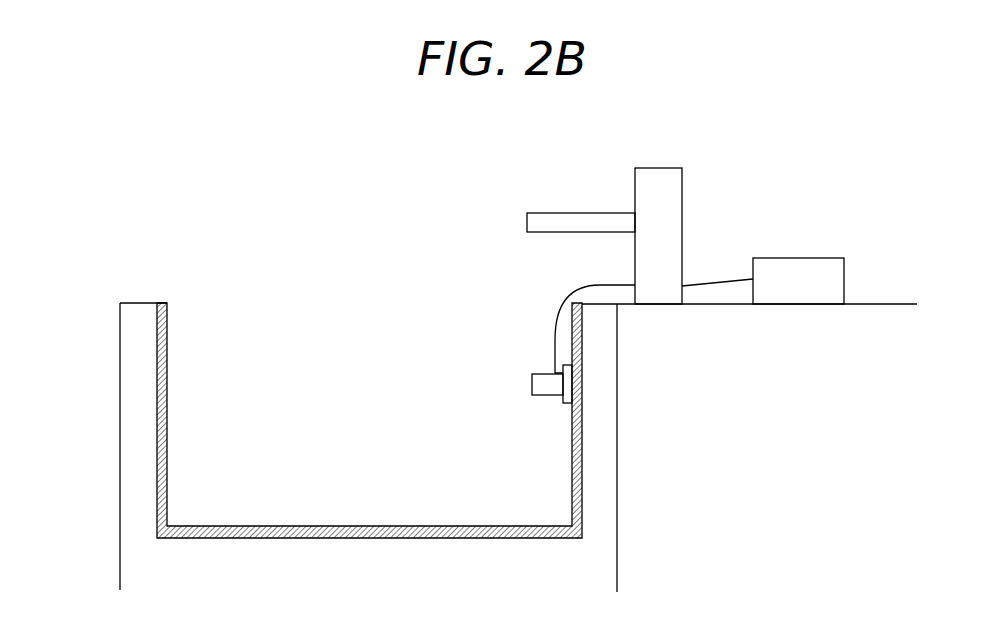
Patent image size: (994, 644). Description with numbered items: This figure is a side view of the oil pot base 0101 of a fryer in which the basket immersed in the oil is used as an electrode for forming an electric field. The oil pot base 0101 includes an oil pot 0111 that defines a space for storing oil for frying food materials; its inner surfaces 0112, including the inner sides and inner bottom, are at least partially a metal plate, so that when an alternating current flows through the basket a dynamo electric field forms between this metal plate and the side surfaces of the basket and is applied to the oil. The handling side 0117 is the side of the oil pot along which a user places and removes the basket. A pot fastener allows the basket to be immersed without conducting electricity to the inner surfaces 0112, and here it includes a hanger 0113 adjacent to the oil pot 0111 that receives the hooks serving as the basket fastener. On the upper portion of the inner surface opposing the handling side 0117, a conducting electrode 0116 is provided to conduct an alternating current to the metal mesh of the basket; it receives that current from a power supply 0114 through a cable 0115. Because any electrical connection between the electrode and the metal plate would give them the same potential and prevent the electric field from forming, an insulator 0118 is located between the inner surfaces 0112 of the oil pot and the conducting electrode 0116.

The oil pot base 0101 is at (298, 152).
The oil pot 0111 is at (147, 303).
The inner surfaces 0112 is at (585, 480).
The hanger 0113 is at (660, 168).
The power supply 0114 is at (833, 258).
The cable 0115 is at (706, 283).
The conducting electrode 0116 is at (550, 385).
The handling side 0117 is at (120, 368).
The insulator 0118 is at (570, 377).